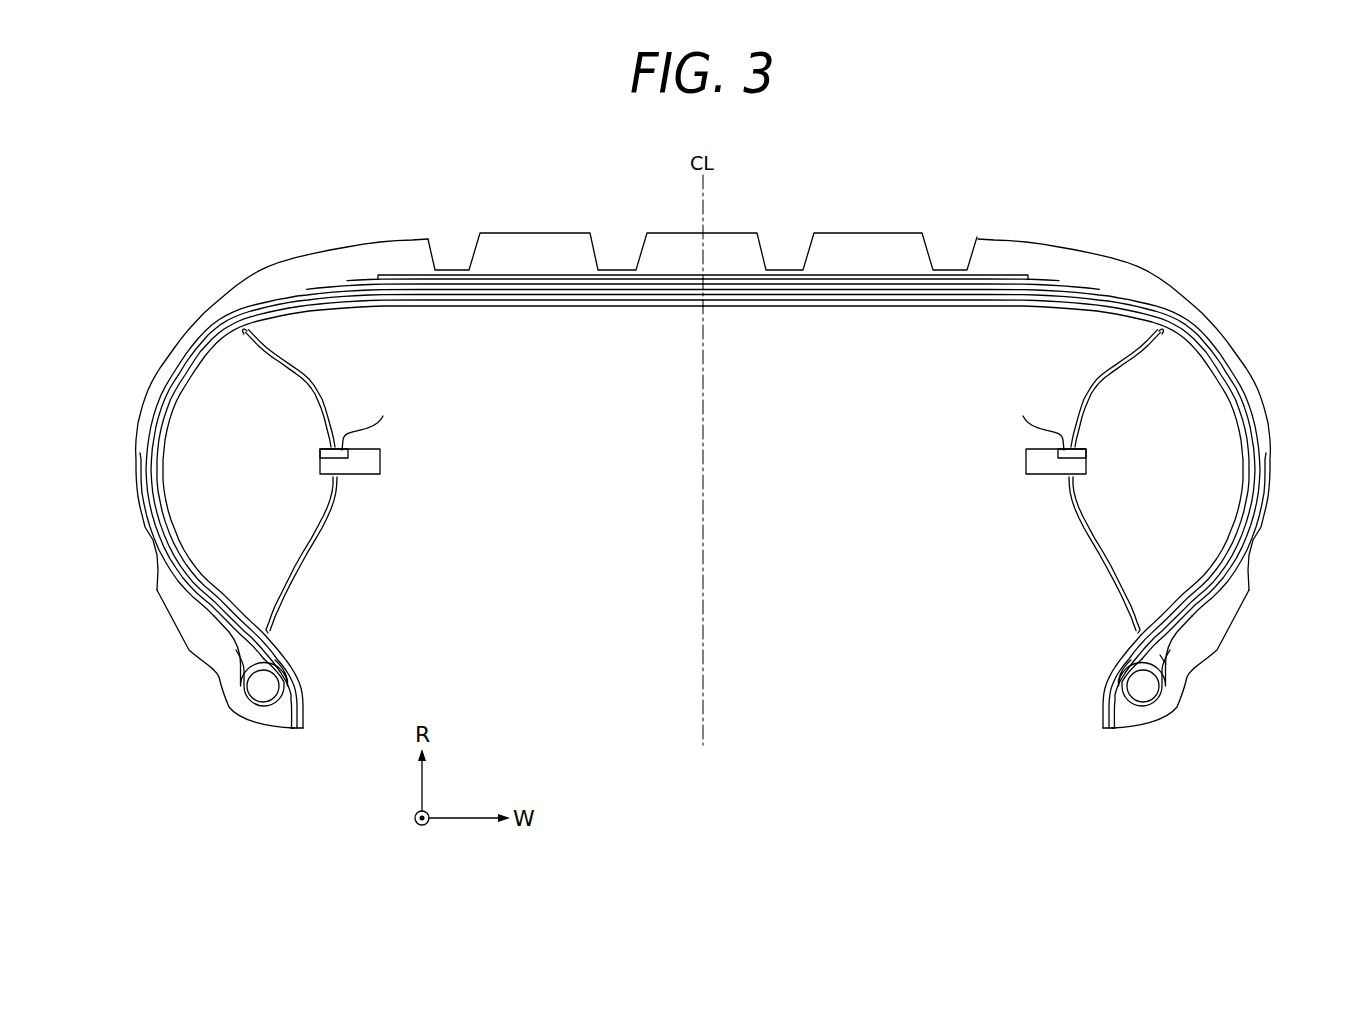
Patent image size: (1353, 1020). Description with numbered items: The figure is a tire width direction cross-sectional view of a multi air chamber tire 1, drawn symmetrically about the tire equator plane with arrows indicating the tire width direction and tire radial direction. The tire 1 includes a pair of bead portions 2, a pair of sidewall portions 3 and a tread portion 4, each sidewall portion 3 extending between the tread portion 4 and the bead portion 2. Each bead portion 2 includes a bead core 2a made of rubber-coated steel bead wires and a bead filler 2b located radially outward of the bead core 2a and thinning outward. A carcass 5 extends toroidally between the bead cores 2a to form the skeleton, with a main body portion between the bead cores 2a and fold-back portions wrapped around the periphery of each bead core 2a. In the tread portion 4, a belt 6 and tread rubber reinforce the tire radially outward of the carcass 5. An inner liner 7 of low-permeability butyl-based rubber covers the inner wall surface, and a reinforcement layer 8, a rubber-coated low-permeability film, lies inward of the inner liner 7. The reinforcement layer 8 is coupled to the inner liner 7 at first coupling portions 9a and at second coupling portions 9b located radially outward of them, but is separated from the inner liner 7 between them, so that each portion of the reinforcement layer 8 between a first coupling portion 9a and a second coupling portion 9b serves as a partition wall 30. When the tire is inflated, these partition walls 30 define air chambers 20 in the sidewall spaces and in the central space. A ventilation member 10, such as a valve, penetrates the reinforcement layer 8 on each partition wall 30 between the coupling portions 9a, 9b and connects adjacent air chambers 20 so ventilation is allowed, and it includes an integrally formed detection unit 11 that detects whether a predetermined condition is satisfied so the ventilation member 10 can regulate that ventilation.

The multi air chamber tire 1 is at (316, 170).
The bead portion 2 is at (704, 659).
The bead core 2a is at (1138, 686).
The bead filler 2b is at (1166, 664).
The sidewall portion 3 is at (124, 445).
The tread portion 4 is at (820, 226).
The carcass 5 is at (1177, 610).
The belt 6 is at (897, 274).
The inner liner 7 is at (200, 346).
The reinforcement layer 8 is at (318, 378).
The first coupling portion 9a is at (284, 632).
The second coupling portion 9b is at (262, 330).
The ventilation member 10 is at (380, 461).
The detection unit 11 is at (703, 420).
The air chamber 20 is at (274, 510).
The partition wall 30 is at (330, 530).